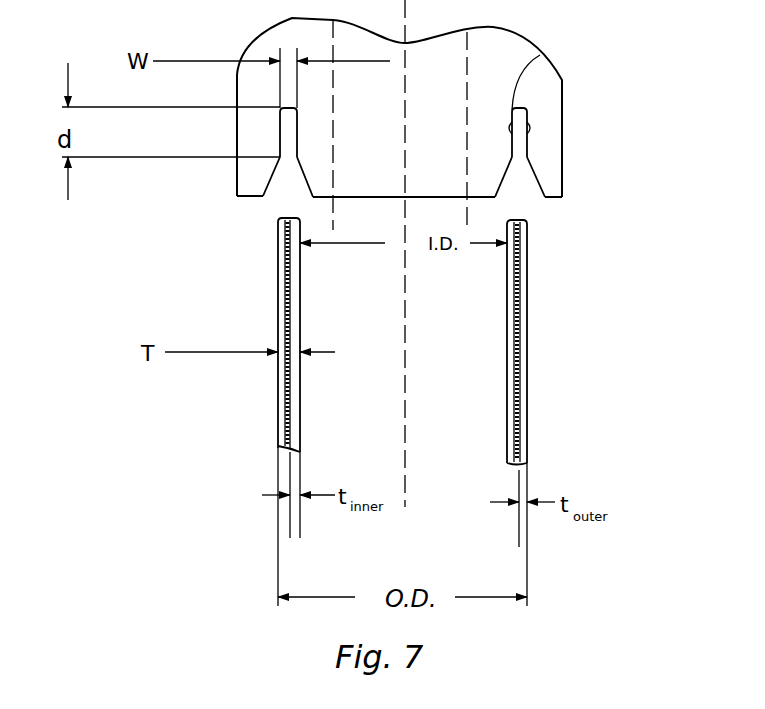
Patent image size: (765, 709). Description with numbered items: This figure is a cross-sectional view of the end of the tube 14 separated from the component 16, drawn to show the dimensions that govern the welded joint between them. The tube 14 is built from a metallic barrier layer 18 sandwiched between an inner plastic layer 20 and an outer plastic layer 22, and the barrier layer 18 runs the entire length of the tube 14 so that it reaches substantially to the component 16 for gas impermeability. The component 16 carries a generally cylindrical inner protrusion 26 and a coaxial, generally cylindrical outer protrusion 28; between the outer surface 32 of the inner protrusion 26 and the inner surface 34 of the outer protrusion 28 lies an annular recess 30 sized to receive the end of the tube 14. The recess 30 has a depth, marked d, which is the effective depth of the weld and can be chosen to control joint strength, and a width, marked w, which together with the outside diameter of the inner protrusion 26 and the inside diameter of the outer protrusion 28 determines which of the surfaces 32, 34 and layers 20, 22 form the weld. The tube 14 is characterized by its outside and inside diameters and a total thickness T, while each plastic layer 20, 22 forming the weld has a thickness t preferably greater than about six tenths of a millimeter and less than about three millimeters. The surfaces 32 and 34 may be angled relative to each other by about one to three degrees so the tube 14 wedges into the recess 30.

The tube 14 is at (536, 366).
The component 16 is at (566, 96).
The metallic barrier layer 18 is at (512, 468).
The inner plastic layer 20 is at (298, 302).
The outer plastic layer 22 is at (285, 300).
The inner protrusion 26 is at (310, 163).
The outer protrusion 28 is at (240, 177).
The annular recess 30 is at (540, 55).
The outer surface of inner protrusion 32 is at (511, 129).
The inner surface of outer protrusion 34 is at (528, 128).